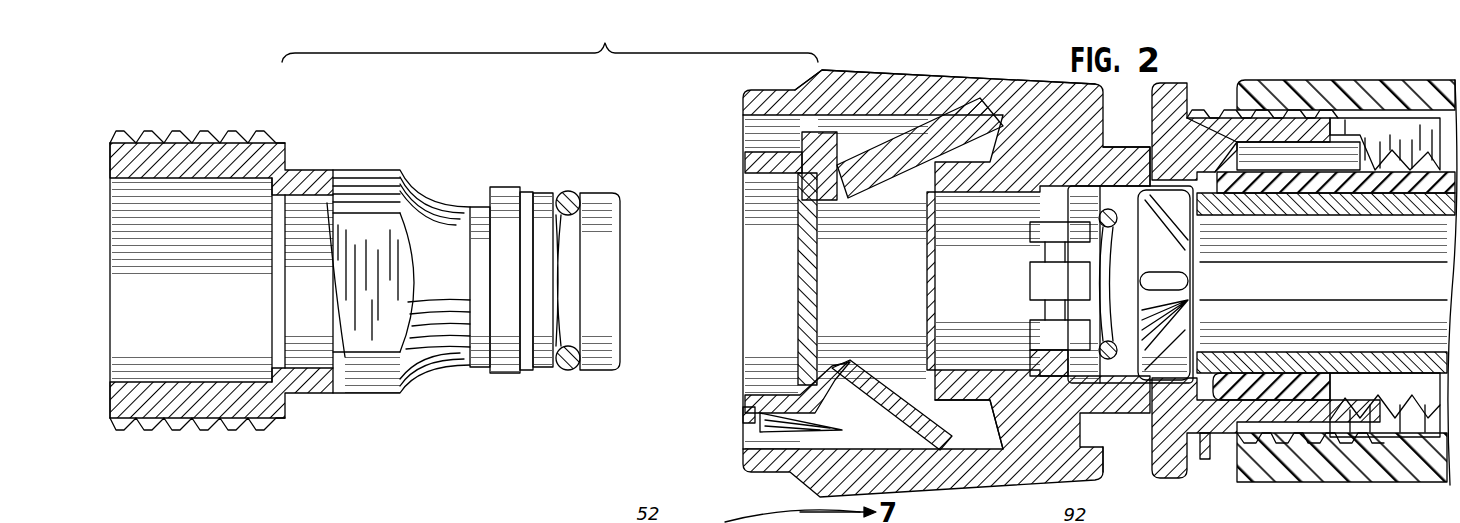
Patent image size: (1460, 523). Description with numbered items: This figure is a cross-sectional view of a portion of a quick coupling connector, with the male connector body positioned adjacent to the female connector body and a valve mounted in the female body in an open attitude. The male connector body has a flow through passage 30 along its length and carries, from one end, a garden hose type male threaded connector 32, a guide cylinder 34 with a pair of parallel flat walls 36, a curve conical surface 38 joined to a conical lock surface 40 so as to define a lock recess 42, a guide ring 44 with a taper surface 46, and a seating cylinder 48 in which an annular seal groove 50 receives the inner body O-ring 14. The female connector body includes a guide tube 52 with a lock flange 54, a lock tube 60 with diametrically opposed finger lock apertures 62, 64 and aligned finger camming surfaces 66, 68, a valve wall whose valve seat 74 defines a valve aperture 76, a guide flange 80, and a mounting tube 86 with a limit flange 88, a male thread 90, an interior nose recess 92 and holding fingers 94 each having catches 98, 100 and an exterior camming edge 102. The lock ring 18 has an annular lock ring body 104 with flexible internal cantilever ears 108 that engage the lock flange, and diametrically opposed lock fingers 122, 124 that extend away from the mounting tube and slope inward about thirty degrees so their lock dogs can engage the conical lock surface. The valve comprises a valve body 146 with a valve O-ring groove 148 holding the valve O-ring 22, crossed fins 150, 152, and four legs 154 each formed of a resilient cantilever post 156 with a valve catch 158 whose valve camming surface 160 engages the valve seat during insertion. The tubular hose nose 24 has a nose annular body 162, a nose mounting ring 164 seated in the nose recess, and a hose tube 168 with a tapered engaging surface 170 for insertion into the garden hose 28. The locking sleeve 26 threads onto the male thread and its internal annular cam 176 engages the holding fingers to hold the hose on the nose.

The inner body O-ring 14 is at (568, 185).
The lock ring 18 is at (946, 269).
The valve O-ring 22 is at (1108, 368).
The tubular hose nose 24 is at (1327, 265).
The locking sleeve 26 is at (1344, 474).
The garden hose 28 is at (1452, 85).
The flow through passage 30 is at (287, 230).
The male threaded connector 32 is at (140, 130).
The guide cylinder 34 is at (355, 395).
The parallel flat walls 36 is at (385, 335).
The curve conical surface 38 is at (455, 362).
The conical lock surface 40 is at (478, 207).
The lock recess 42 is at (427, 190).
The guide ring 44 is at (510, 368).
The taper surface 46 is at (526, 192).
The seating cylinder 48 is at (595, 368).
The annular seal groove 50 is at (598, 276).
The guide tube 52 is at (745, 168).
The lock flange 54 is at (745, 155).
The lock tube 60 is at (835, 200).
The finger lock aperture 62 is at (897, 192).
The finger lock aperture 64 is at (900, 385).
The finger camming surface 66 is at (985, 142).
The finger camming surface 68 is at (945, 400).
The valve seat 74 is at (1050, 378).
The valve aperture 76 is at (1048, 248).
The guide flange 80 is at (1080, 440).
The mounting tube 86 is at (1205, 460).
The limit flange 88 is at (1266, 263).
The male thread 90 is at (1215, 108).
The nose recess 92 is at (1150, 150).
The holding fingers 94 is at (1330, 482).
The catch 98 is at (1385, 105).
The catch 100 is at (1410, 150).
The exterior camming edge 102 is at (1435, 470).
The lock ring body 104 is at (845, 82).
The internal cantilever ears 108 is at (745, 428).
The lock finger 122 is at (962, 80).
The lock finger 124 is at (910, 420).
The valve body 146 is at (1195, 325).
The valve O-ring groove 148 is at (1175, 255).
The crossed fin 150 is at (1258, 220).
The crossed fin 152 is at (1195, 288).
The legs 154 is at (1035, 331).
The resilient cantilever post 156 is at (1055, 296).
The valve catch 158 is at (1030, 239).
The valve camming surface 160 is at (1030, 212).
The nose annular body 162 is at (1210, 216).
The nose mounting ring 164 is at (1215, 110).
The hose tube 168 is at (1320, 216).
The tapered engaging surface 170 is at (1425, 216).
The internal annular cam 176 is at (1395, 140).